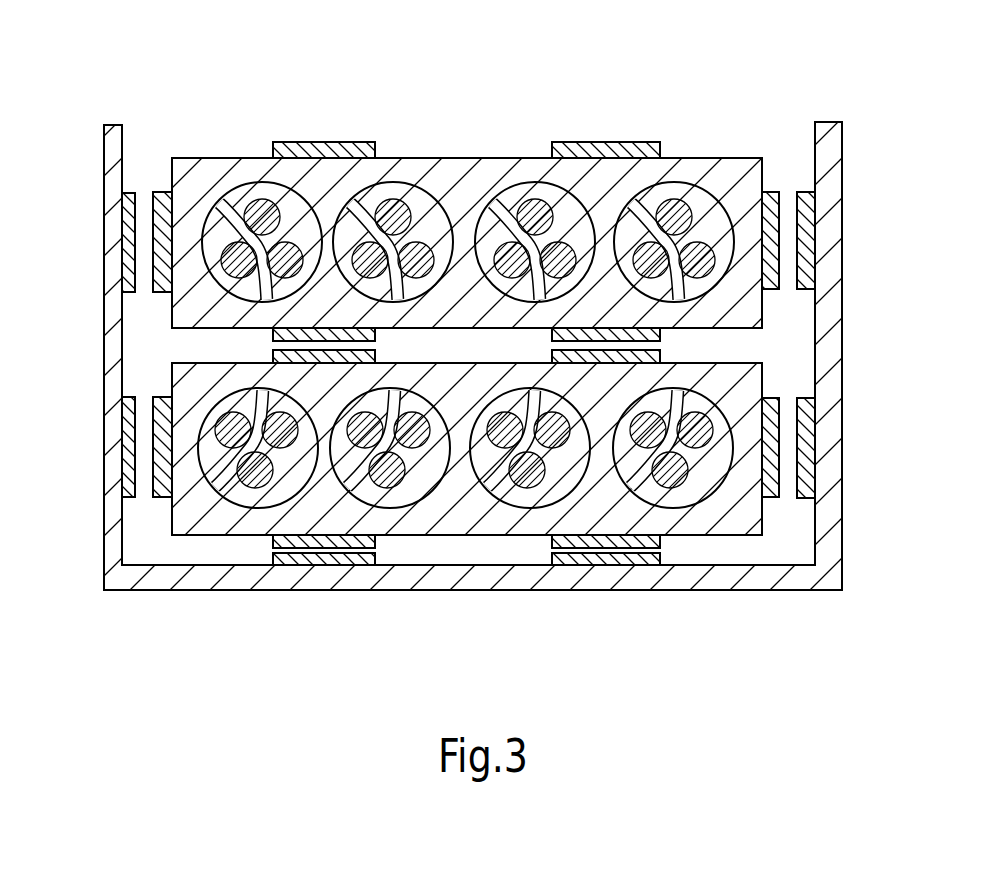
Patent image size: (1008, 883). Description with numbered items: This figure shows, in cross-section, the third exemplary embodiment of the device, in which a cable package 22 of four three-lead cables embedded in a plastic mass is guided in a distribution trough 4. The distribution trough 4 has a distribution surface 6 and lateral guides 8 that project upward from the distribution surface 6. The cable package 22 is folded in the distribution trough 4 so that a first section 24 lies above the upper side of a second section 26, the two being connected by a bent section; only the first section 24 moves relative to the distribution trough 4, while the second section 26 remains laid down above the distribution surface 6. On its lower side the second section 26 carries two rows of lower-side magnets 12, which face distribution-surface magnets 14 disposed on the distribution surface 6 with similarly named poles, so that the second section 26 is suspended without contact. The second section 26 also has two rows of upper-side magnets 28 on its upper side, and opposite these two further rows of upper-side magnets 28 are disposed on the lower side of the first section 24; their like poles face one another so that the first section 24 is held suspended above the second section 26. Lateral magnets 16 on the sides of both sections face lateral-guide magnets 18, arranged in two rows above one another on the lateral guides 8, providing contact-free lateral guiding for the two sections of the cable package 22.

The distribution trough 4 is at (560, 578).
The distribution surface 6 is at (475, 575).
The lateral guides 8 is at (115, 365).
The lower-side magnets 12 is at (318, 142).
The distribution-surface magnets 14 is at (373, 557).
The lateral magnets 16 is at (162, 293).
The lateral-guide magnets 18 is at (112, 247).
The cable package 22 is at (449, 146).
The first section 24 is at (718, 158).
The second section 26 is at (728, 535).
The upper-side magnets 28 is at (463, 345).